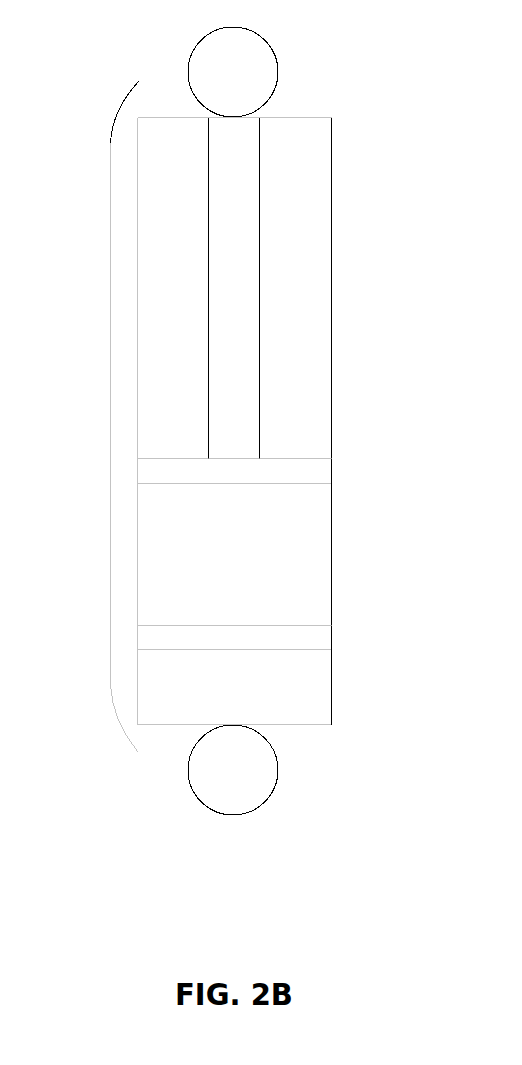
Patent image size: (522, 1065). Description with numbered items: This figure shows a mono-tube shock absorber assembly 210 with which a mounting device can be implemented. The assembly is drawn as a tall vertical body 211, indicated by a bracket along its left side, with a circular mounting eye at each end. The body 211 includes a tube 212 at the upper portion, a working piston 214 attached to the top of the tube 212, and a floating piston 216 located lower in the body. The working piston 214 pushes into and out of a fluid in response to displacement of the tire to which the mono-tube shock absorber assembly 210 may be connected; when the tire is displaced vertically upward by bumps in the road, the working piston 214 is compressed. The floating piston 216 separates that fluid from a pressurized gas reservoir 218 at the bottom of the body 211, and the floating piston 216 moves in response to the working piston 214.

The mono-tube shock absorber assembly 210 is at (325, 78).
The body 211 is at (110, 418).
The tube 212 is at (336, 135).
The working piston 214 is at (315, 470).
The floating piston 216 is at (310, 637).
The pressurized gas reservoir 218 is at (302, 664).